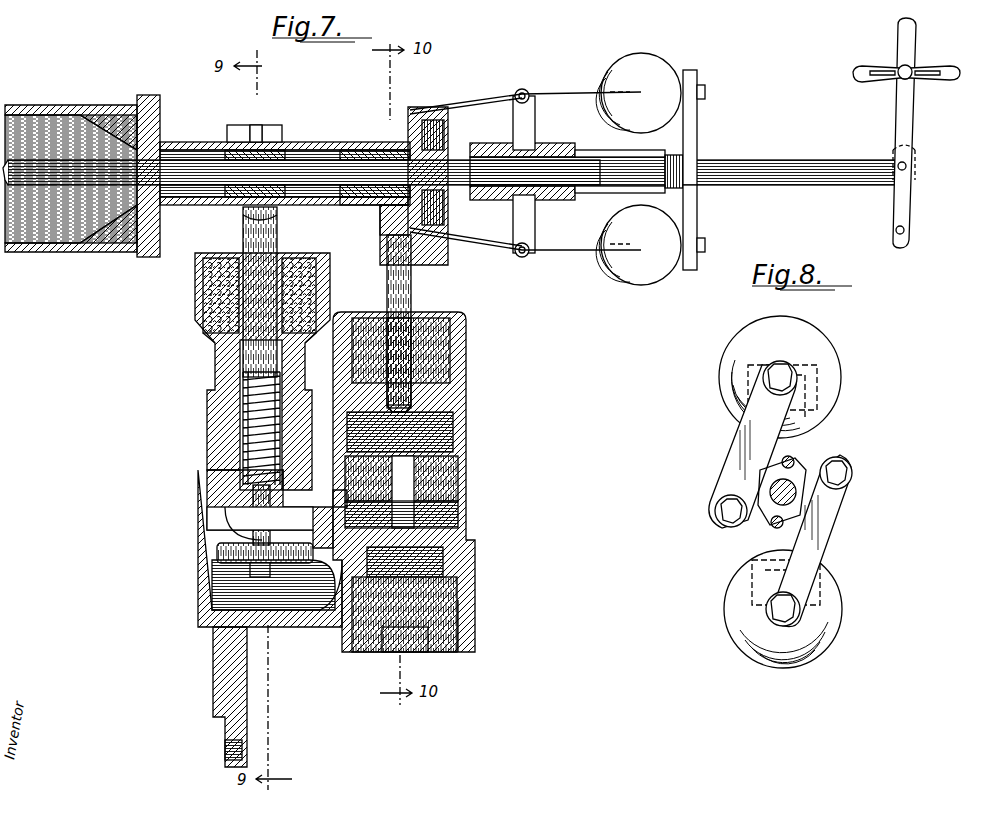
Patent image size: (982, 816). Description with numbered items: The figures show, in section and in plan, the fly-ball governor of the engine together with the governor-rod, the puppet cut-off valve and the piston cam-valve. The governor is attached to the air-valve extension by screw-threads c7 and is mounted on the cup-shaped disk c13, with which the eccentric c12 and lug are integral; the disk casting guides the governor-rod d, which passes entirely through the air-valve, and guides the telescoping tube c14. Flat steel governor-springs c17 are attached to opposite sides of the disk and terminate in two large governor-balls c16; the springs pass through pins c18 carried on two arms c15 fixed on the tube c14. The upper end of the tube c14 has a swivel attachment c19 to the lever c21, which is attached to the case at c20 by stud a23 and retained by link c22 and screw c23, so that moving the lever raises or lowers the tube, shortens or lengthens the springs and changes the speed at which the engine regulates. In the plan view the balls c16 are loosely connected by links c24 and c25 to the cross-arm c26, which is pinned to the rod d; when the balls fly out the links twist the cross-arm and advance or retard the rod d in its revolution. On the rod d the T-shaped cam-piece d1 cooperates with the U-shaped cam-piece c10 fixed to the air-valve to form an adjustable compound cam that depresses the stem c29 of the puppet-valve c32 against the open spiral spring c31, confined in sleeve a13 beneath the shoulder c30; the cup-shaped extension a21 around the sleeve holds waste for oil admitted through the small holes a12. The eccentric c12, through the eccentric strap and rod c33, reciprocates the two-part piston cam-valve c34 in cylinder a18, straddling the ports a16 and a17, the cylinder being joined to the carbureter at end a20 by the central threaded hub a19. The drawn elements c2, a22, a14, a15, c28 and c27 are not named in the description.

In FIG. 7, the governor-rod d is at (80, 138).
In FIG. 7, the flange c2 is at (160, 120).
In FIG. 7, the U-shaped cam-piece c10 is at (232, 125).
In FIG. 7, the T-shaped cam-piece d1 is at (256, 125).
In FIG. 7, the eccentric c12 is at (385, 240).
In FIG. 7, the cup-shaped disk c13 is at (444, 134).
In FIG. 7, the screw-threads c7 is at (370, 208).
In FIG. 7, the eccentric strap and rod c33 is at (414, 296).
In FIG. 7, the cylinder a18 is at (462, 358).
In FIG. 7, the sleeve a13 is at (365, 445).
In FIG. 7, the port a17 is at (420, 480).
In FIG. 7, the port a16 is at (440, 512).
In FIG. 7, the piston cam-valve c34 is at (395, 588).
In FIG. 7, the central threaded hub a19 is at (395, 652).
In FIG. 7, the end of cylinder a20 is at (470, 652).
In FIG. 7, the cup-shaped extension a21 is at (196, 308).
In FIG. 7, the packing a22 is at (203, 272).
In FIG. 7, the small holes a12 is at (322, 284).
In FIG. 7, the open spiral spring c31 is at (284, 404).
In FIG. 7, the stem c29 is at (242, 230).
In FIG. 7, the shoulder c30 is at (256, 367).
In FIG. 7, the passage a14 is at (300, 534).
In FIG. 7, the puppet-valve c32 is at (218, 560).
In FIG. 7, the chamber a15 is at (290, 598).
In FIG. 7, the telescoping tube c14 is at (525, 150).
In FIG. 7, the nut c28 is at (690, 170).
In FIG. 8, the nut c28 is at (716, 511).
In FIG. 7, the swivel attachment c19 is at (785, 160).
In FIG. 7, the link c24 is at (690, 114).
In FIG. 8, the link c24 is at (742, 432).
In FIG. 7, the link c25 is at (697, 212).
In FIG. 8, the link c25 is at (838, 530).
In FIG. 7, the governor-balls c16 is at (656, 60).
In FIG. 8, the governor-balls c16 is at (822, 348).
In FIG. 7, the arms c15 is at (533, 128).
In FIG. 7, the pins c18 is at (524, 89).
In FIG. 7, the governor-springs c17 is at (570, 94).
In FIG. 7, the lever attachment point c20 is at (910, 232).
In FIG. 7, the stud a23 is at (896, 228).
In FIG. 7, the lever c21 is at (912, 52).
In FIG. 7, the link c22 is at (945, 75).
In FIG. 7, the screw c23 is at (898, 68).
In FIG. 8, the cross-arm c26 is at (800, 468).
In FIG. 8, the pin c27 is at (842, 474).